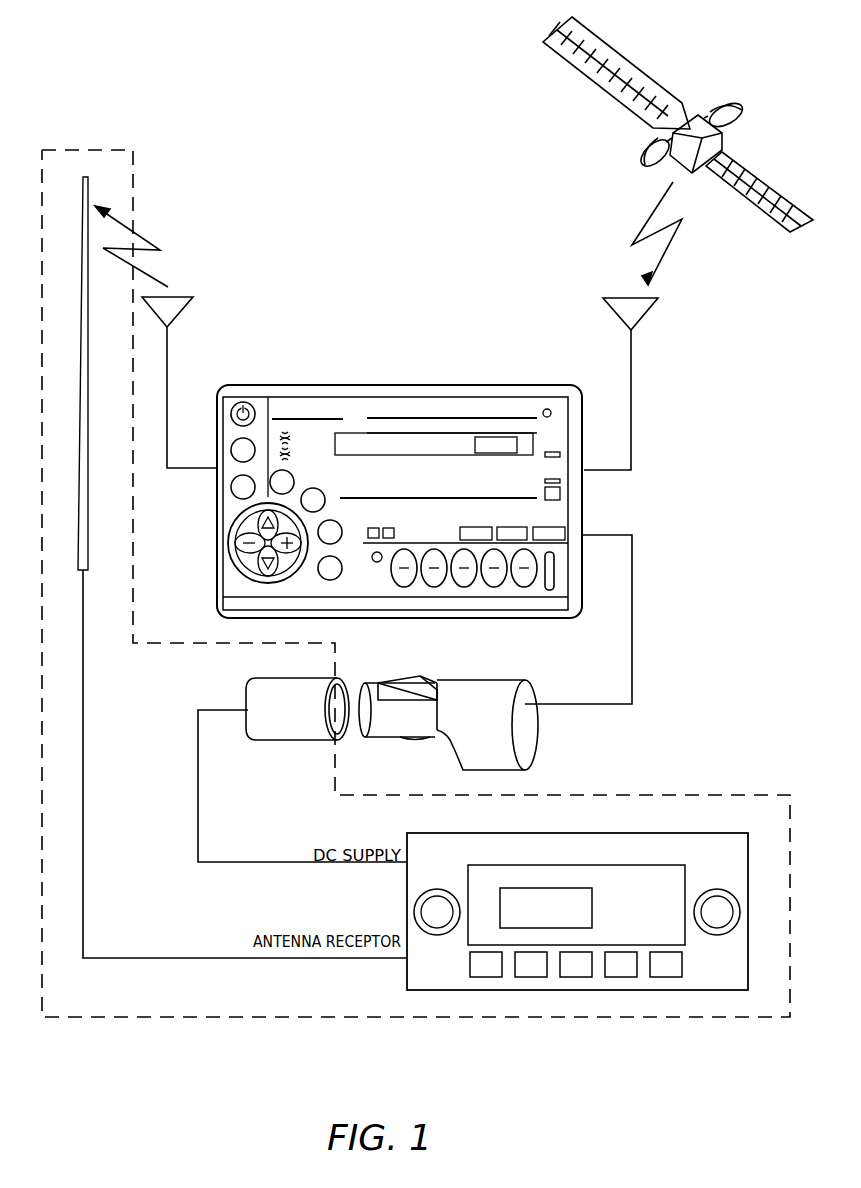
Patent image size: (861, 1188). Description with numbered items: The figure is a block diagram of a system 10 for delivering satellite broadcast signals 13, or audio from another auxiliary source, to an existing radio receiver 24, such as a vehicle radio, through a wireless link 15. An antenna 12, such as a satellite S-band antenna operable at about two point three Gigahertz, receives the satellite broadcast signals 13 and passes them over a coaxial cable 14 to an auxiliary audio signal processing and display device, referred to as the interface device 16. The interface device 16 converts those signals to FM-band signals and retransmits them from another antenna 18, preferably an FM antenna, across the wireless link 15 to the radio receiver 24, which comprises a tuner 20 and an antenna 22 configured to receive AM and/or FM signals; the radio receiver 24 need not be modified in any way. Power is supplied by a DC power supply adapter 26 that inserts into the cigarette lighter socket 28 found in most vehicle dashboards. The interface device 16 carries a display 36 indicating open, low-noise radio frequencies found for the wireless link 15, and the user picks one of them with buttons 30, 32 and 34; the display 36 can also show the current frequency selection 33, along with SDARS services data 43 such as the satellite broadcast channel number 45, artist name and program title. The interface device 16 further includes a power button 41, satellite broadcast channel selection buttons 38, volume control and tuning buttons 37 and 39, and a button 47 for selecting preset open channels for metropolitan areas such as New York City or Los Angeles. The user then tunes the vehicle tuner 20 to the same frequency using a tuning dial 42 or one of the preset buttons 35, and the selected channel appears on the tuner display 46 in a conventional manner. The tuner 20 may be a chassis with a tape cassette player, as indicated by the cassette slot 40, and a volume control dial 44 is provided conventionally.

The system 10 is at (688, 490).
The antenna 12 is at (608, 306).
The satellite broadcast signals 13 is at (640, 228).
The coaxial cable 14 is at (633, 368).
The wireless link 15 is at (150, 243).
The interface device 16 is at (408, 385).
The antenna 18 is at (183, 312).
The tuner 20 is at (730, 957).
The antenna 22 is at (83, 258).
The radio receiver 24 is at (192, 1022).
The DC power supply adapter 26 is at (414, 722).
The cigarette lighter socket 28 is at (285, 740).
The button 30 is at (294, 479).
The button 32 is at (324, 507).
The current frequency selection 33 is at (433, 525).
The button 34 is at (340, 542).
The preset buttons 35 is at (537, 977).
The display 36 is at (558, 433).
The volume control and tuning buttons 37 is at (258, 526).
The satellite broadcast channel selection buttons 38 is at (460, 630).
The volume control and tuning buttons 39 is at (293, 565).
The cassette slot 40 is at (580, 872).
The power button 41 is at (248, 407).
The tuning dial 42 is at (440, 890).
The SDARS services data 43 is at (357, 452).
The volume control dial 44 is at (716, 897).
The satellite broadcast channel number 45 is at (496, 437).
The tuner display 46 is at (505, 925).
The button 47 is at (231, 486).